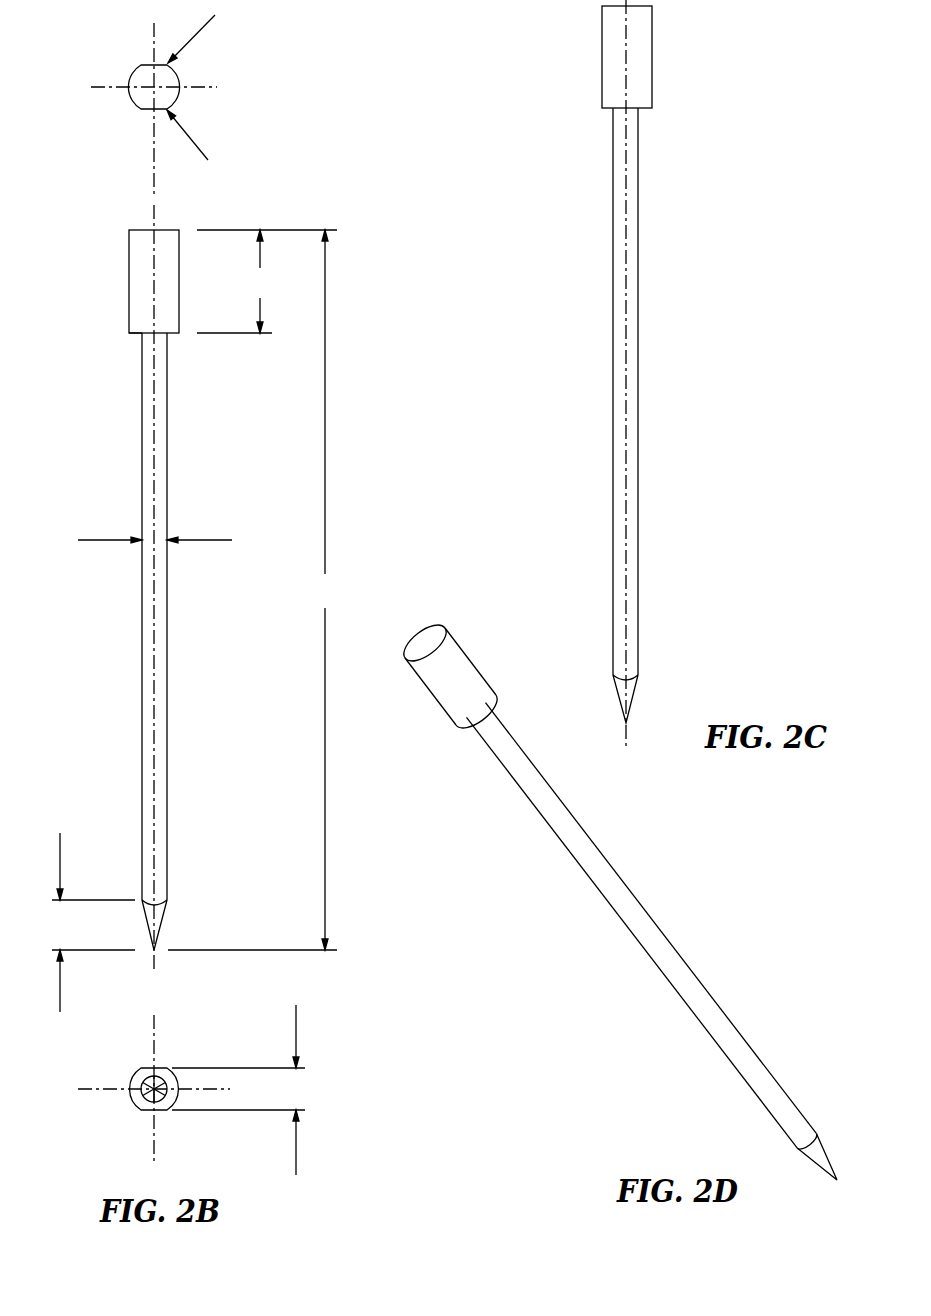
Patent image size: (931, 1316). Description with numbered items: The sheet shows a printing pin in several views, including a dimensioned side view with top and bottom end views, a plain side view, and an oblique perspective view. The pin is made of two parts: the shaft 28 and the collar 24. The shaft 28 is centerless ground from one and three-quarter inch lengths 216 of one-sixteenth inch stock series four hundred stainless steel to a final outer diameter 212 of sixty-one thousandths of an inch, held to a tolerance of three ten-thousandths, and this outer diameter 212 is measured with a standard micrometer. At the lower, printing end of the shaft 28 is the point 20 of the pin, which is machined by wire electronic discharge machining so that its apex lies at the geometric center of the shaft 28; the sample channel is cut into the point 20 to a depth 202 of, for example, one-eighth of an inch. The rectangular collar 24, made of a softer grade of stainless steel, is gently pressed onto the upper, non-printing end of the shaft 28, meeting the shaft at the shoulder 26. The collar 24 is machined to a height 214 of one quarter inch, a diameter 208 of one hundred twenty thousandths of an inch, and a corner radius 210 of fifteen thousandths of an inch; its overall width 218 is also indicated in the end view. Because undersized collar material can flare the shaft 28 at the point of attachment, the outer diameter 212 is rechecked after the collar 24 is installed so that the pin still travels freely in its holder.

In FIG. 2B, the point 20 is at (163, 927).
In FIG. 2C, the point 20 is at (635, 700).
In FIG. 2D, the point 20 is at (815, 1160).
In FIG. 2B, the collar 24 is at (130, 75).
In FIG. 2C, the collar 24 is at (617, 60).
In FIG. 2D, the collar 24 is at (467, 665).
In FIG. 2B, the shoulder between head and shaft 26 is at (133, 335).
In FIG. 2B, the shaft 28 is at (142, 648).
In FIG. 2C, the shaft 28 is at (613, 425).
In FIG. 2D, the shaft 28 is at (590, 877).
In FIG. 2B, the depth 202 is at (192, 922).
In FIG. 2B, the diameter 208 is at (207, 31).
In FIG. 2B, the radius 210 is at (203, 147).
In FIG. 2B, the outer diameter 212 is at (172, 540).
In FIG. 2B, the height 214 is at (267, 281).
In FIG. 2B, the length 216 is at (325, 590).
In FIG. 2B, the head width dimension 218 is at (241, 1090).